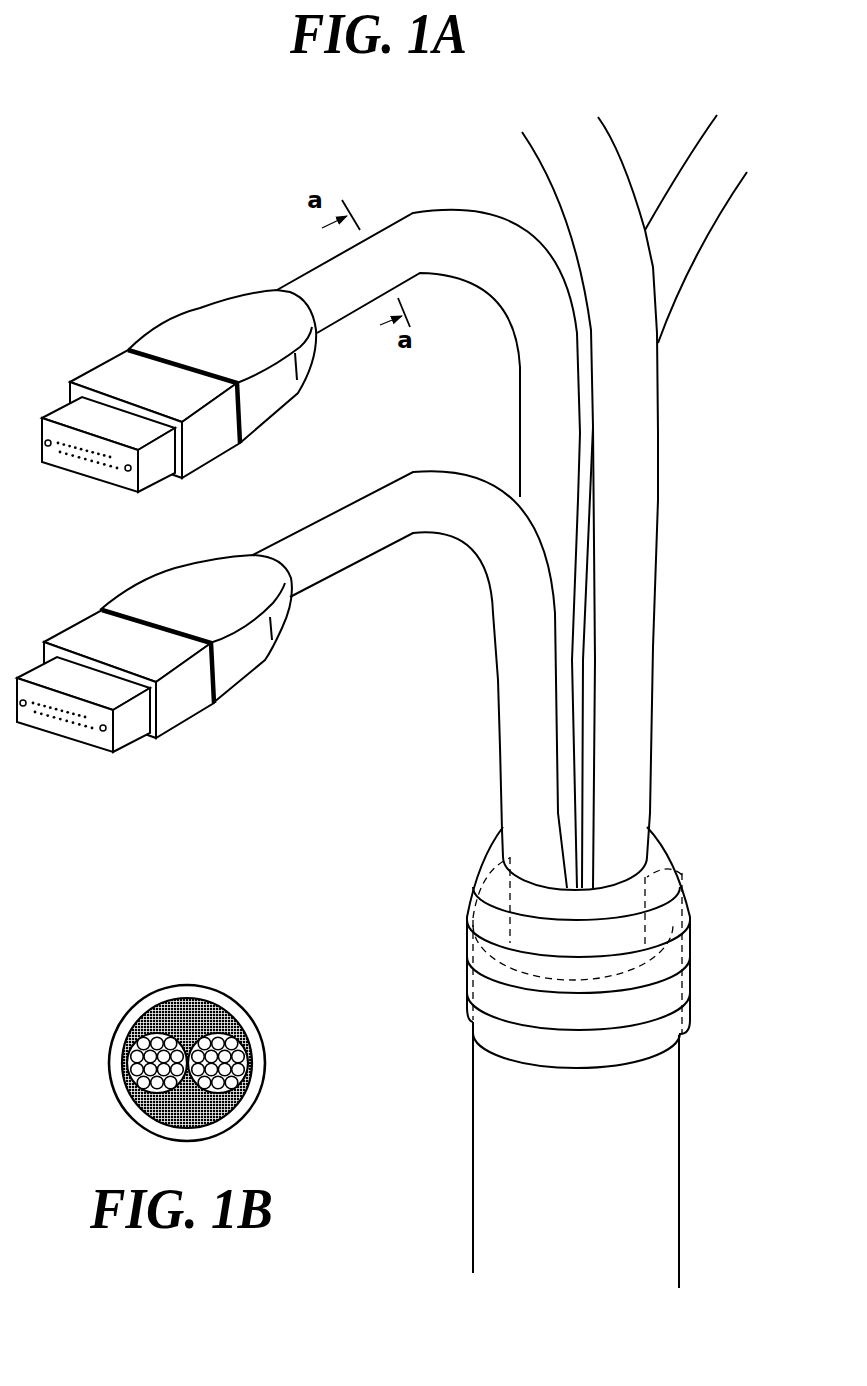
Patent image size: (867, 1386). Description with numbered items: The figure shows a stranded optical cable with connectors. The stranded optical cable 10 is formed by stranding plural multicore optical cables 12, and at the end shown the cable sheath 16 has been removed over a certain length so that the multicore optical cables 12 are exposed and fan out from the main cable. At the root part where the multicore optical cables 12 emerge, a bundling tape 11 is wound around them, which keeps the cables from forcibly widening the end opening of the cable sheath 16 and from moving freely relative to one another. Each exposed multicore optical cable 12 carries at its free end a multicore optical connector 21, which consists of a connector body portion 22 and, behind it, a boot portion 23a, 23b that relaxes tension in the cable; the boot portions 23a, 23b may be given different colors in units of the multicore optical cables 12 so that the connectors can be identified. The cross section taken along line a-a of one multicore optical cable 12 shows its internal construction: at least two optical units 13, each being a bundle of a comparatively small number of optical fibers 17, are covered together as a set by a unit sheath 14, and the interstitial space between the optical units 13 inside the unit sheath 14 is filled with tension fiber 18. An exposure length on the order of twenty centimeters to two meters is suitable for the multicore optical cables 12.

In FIG. 1A, the stranded optical cable 10 is at (679, 1130).
In FIG. 1A, the bundling tape 11 is at (473, 887).
In FIG. 1A, the multicore optical cable 12 is at (643, 588).
In FIG. 1B, the multicore optical cable 12 is at (130, 1008).
In FIG. 1B, the optical unit 13 is at (237, 1030).
In FIG. 1B, the unit sheath 14 is at (112, 1082).
In FIG. 1A, the cable sheath 16 is at (690, 893).
In FIG. 1B, the optical fiber 17 is at (237, 1058).
In FIG. 1B, the tension fiber 18 is at (223, 1100).
In FIG. 1A, the multicore optical connector 21 is at (163, 308).
In FIG. 1A, the connector body portion 22 is at (132, 727).
In FIG. 1A, the boot portion 23a is at (260, 640).
In FIG. 1A, the boot portion 23b is at (283, 395).